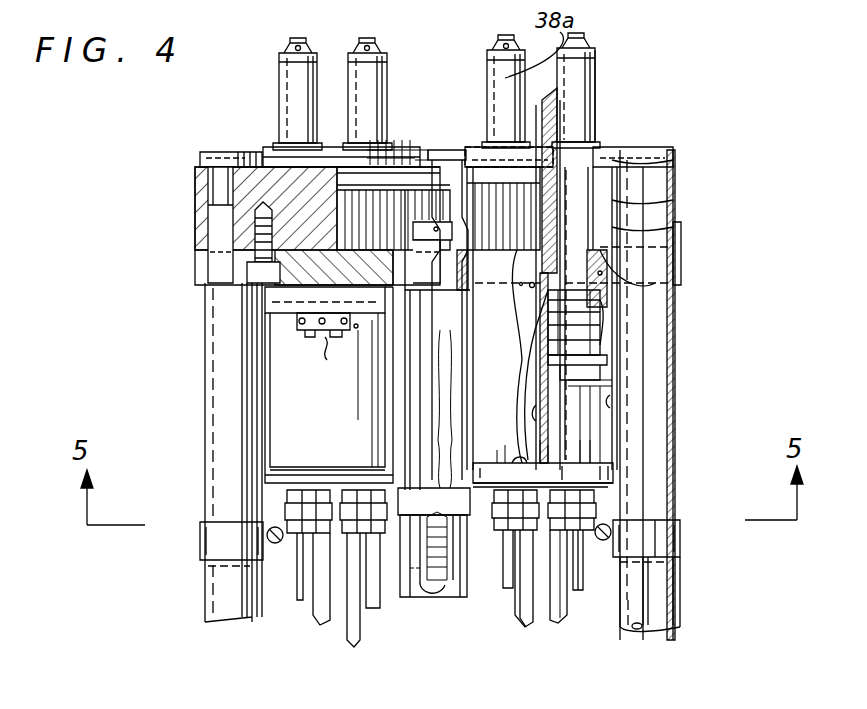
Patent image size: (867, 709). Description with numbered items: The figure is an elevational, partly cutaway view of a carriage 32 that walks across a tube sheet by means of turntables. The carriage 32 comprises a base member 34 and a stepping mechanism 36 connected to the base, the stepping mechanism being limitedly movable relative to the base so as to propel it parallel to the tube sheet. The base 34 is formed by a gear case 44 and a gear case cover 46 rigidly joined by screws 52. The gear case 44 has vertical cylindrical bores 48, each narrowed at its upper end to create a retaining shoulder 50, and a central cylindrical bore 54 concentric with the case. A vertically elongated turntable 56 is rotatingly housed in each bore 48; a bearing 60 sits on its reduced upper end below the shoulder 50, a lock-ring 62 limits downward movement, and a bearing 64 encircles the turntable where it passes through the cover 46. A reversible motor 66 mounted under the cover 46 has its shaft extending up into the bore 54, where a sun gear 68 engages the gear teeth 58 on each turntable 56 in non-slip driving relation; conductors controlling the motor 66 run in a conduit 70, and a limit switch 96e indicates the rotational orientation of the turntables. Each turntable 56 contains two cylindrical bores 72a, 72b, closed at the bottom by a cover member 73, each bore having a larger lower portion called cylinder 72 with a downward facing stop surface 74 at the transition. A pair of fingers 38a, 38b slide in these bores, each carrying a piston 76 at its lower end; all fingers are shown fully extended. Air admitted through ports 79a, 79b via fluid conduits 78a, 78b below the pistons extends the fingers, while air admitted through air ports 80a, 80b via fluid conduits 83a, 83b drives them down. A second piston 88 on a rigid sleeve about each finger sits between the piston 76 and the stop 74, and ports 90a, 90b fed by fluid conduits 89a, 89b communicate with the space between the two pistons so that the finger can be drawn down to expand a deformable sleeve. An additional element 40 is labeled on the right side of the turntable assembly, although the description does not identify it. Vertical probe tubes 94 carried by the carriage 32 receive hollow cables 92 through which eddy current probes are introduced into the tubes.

The carriage 32 is at (733, 100).
The base member 34 is at (688, 238).
The stepping mechanism 36 is at (598, 68).
The finger 38a is at (290, 78).
The finger 38b is at (372, 75).
The probe holder 40 is at (614, 376).
The gear case 44 is at (195, 178).
The gear case cover 46 is at (195, 265).
The cylindrical bore 48 is at (648, 224).
The retaining shoulder 50 is at (614, 162).
The screw 52 is at (250, 283).
The central cylindrical bore 54 is at (370, 150).
The turntable 56 is at (263, 152).
The gear teeth 58 is at (680, 256).
The bearing 60 is at (656, 167).
The lock-ring 62 is at (605, 138).
The bearing 64 is at (466, 152).
The reversible motor 66 is at (398, 428).
The sun gear 68 is at (337, 215).
The conduit 70 is at (440, 596).
The cylinder 72 is at (655, 200).
The cylindrical bore 72a is at (540, 426).
The cylindrical bore 72b is at (540, 416).
The cover member 73 is at (548, 488).
The stop surface 74 is at (655, 283).
The piston 76 is at (655, 343).
The fluid conduit 78a is at (503, 590).
The fluid conduit 78b is at (578, 586).
The port 79a is at (550, 455).
The port 79b is at (548, 480).
The air port 80a is at (532, 278).
The air port 80b is at (612, 270).
The fluid conduit 83a is at (515, 610).
The fluid conduit 83b is at (565, 610).
The piston 88 is at (560, 305).
The fluid conduit 89a is at (528, 628).
The fluid conduit 89b is at (552, 625).
The port 90a is at (555, 342).
The port 90b is at (605, 308).
The hollow cable 92 is at (680, 604).
The probe tube 94 is at (683, 522).
The limit switch 96e is at (325, 345).